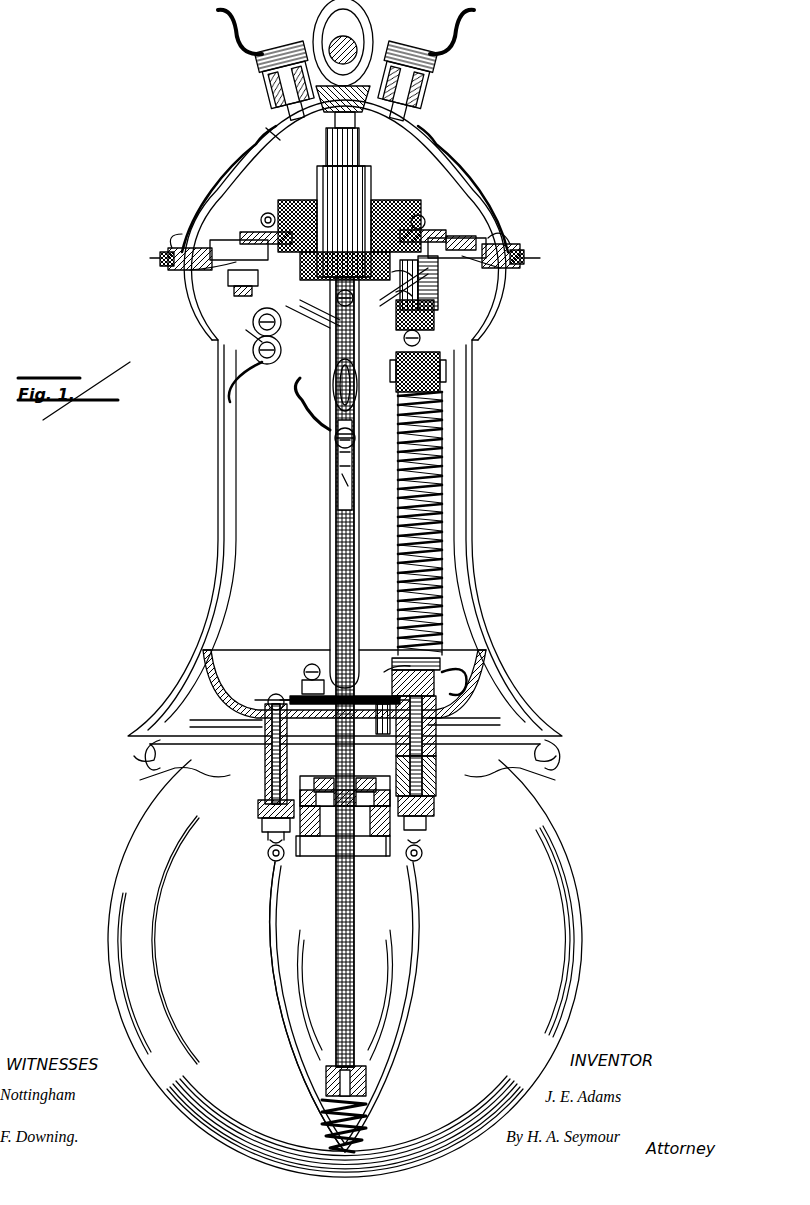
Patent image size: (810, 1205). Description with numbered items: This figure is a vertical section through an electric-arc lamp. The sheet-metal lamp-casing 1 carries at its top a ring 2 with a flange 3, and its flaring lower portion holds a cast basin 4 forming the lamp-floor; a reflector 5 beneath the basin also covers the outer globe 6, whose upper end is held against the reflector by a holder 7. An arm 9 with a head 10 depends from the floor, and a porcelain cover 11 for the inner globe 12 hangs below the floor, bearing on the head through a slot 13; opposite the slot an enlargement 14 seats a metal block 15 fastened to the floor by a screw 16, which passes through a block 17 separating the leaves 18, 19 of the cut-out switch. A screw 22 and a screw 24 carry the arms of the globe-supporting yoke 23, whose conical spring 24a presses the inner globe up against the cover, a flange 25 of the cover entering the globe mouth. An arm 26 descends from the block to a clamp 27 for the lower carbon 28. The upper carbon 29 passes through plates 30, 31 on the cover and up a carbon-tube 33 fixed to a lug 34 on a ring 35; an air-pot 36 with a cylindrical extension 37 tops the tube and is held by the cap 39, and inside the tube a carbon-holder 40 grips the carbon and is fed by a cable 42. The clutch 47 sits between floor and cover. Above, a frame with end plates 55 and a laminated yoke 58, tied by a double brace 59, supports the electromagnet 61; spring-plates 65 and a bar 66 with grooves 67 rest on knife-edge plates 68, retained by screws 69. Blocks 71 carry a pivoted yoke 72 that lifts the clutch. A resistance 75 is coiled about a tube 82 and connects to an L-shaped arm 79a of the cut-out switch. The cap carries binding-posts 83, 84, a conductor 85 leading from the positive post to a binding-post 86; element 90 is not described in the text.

The lamp-casing 1 is at (216, 580).
The ring 2 is at (350, 263).
The flange 3 is at (514, 250).
The basin 4 is at (236, 652).
The reflector 5 is at (478, 712).
The outer globe 6 is at (349, 968).
The holder 7 is at (526, 758).
The arm 9 is at (268, 749).
The flange or head 10 is at (260, 796).
The porcelain cover 11 is at (340, 787).
The inner globe 12 is at (307, 1007).
The slot 13 is at (260, 818).
The enlargement 14 is at (436, 778).
The metal block 15 is at (438, 746).
The screw 16 is at (464, 698).
The block 17 is at (380, 672).
The upper leaf 18 is at (411, 653).
The leaf 19 is at (392, 678).
The screw 22 is at (436, 800).
The inner globe-supporting yoke 23 is at (430, 928).
The screw 24 is at (260, 806).
The conical coiled spring 24a is at (372, 1106).
The depending flange 25 is at (320, 850).
The arm 26 is at (398, 864).
The clamp 27 is at (328, 1066).
The lower carbon 28 is at (334, 980).
The upper carbon 29 is at (356, 740).
The metal plate 30 is at (314, 818).
The metal plate 31 is at (374, 818).
The carbon-tube 33 is at (325, 482).
The lug 34 is at (302, 674).
The ring 35 is at (300, 692).
The air-pot 36 is at (370, 178).
The cylindrical extension 37 is at (326, 156).
The cap 39 is at (448, 150).
The carbon-holder 40 is at (334, 508).
The connecting wire or cable 42 is at (304, 418).
The clutch 47 is at (362, 778).
The end plates 55 is at (454, 270).
The U-shaped yoke 58 is at (322, 340).
The double brace 59 is at (354, 296).
The electromagnet 61 is at (306, 204).
The spring-plates 65 is at (244, 232).
The bar 66 is at (460, 236).
The V-shaped grooves 67 is at (216, 240).
The knife-edge plates 68 is at (196, 270).
The screws 69 is at (416, 200).
The blocks 71 is at (234, 286).
The yoke 72 is at (246, 314).
The resistance 75 is at (444, 410).
The L-shaped arm 79a is at (436, 310).
The tube 82 is at (450, 658).
The positive binding-post 83 is at (282, 46).
The binding-post 84 is at (406, 46).
The conductor 85 is at (262, 140).
The binding-post 86 is at (255, 369).
The suspension eye 90 is at (396, 66).